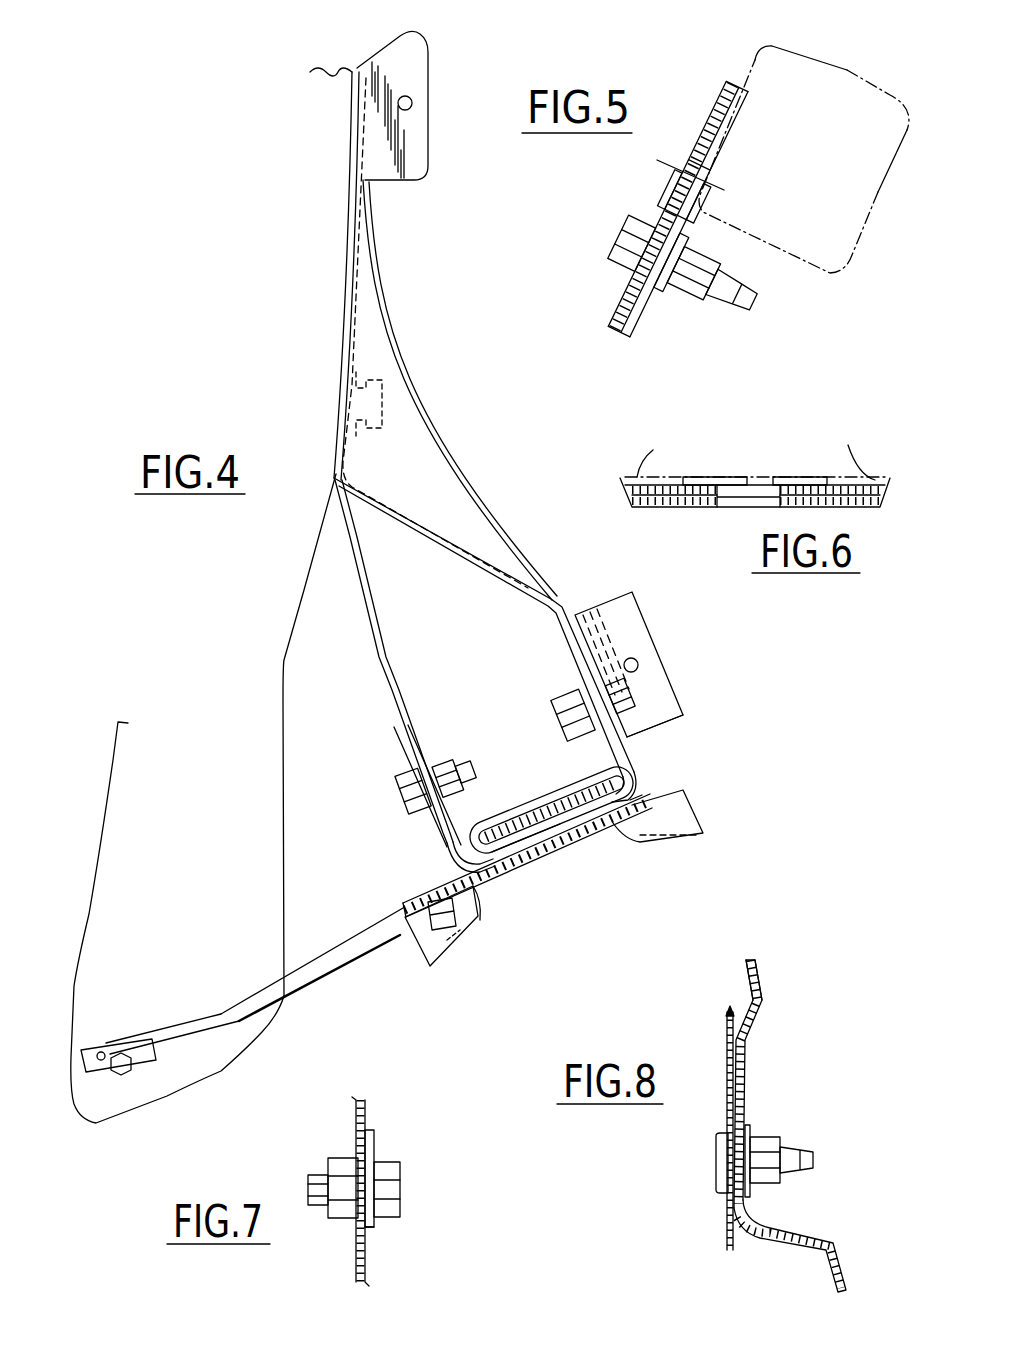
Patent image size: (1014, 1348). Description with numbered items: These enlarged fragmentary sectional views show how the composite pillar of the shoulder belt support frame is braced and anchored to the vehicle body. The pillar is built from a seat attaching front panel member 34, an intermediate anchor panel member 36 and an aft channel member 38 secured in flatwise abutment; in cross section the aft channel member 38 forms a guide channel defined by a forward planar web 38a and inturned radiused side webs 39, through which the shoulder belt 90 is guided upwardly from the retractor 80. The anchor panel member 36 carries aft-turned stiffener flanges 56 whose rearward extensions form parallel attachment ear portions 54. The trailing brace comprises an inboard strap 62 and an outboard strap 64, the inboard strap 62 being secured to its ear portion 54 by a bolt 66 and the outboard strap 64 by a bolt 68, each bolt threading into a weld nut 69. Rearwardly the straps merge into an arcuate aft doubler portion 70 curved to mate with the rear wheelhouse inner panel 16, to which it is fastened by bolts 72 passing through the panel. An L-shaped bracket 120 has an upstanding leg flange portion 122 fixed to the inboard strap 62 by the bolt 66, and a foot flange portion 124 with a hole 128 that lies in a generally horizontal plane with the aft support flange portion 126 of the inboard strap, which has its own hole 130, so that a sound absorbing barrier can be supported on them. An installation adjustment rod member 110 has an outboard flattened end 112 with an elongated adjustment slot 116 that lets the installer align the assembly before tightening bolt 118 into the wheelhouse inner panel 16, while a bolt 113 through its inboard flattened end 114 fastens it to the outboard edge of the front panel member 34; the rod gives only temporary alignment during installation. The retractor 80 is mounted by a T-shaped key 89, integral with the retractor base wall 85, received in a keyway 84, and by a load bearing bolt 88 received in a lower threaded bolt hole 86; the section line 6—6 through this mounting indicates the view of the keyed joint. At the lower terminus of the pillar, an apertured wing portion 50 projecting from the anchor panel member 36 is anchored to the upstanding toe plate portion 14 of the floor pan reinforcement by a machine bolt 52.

In FIG. 4, the aft support flange portion 126 is at (397, 52).
In FIG. 4, the hole 130 is at (412, 97).
In FIG. 4, the aft doubler portion 70 is at (350, 303).
In FIG. 8, the aft doubler portion 70 is at (748, 1073).
In FIG. 4, the bolt 72 is at (392, 373).
In FIG. 8, the bolt 72 is at (798, 1149).
In FIG. 4, the inboard strap 62 is at (551, 586).
In FIG. 8, the inboard strap 62 is at (764, 980).
In FIG. 4, the outboard strap 64 is at (385, 682).
In FIG. 8, the outboard strap 64 is at (758, 1227).
In FIG. 4, the rear wheelhouse inner panel 16 is at (118, 778).
In FIG. 8, the rear wheelhouse inner panel 16 is at (726, 1018).
In FIG. 4, the installation adjustment rod member 110 is at (233, 1003).
In FIG. 4, the outboard flattened end 112 is at (167, 1032).
In FIG. 4, the elongated adjustment slot 116 is at (153, 1064).
In FIG. 4, the bolt 118 is at (115, 1043).
In FIG. 4, the bolt 113 is at (481, 917).
In FIG. 4, the inboard flattened end 114 is at (433, 893).
In FIG. 4, the forward planar web 38a is at (600, 823).
In FIG. 4, the front panel member 34 is at (685, 790).
In FIG. 5, the front panel member 34 is at (619, 297).
In FIG. 6, the front panel member 34 is at (682, 510).
In FIG. 4, the intermediate anchor panel member 36 is at (646, 785).
In FIG. 5, the intermediate anchor panel member 36 is at (616, 333).
In FIG. 6, the intermediate anchor panel member 36 is at (868, 500).
In FIG. 7, the intermediate anchor panel member 36 is at (376, 1230).
In FIG. 4, the stiffener flange 56 is at (638, 783).
In FIG. 4, the attachment ear portion 54 is at (602, 765).
In FIG. 4, the aft channel member 38 is at (590, 786).
In FIG. 5, the aft channel member 38 is at (640, 327).
In FIG. 6, the aft channel member 38 is at (870, 483).
In FIG. 4, the inturned radiused side web 39 is at (492, 818).
In FIG. 4, the shoulder belt 90 is at (547, 833).
In FIG. 4, the bolt 68 is at (398, 793).
In FIG. 4, the bolt 66 is at (625, 698).
In FIG. 4, the weld nut 69 is at (560, 703).
In FIG. 4, the L-shaped bracket 120 is at (647, 606).
In FIG. 4, the upstanding leg flange portion 122 is at (597, 607).
In FIG. 4, the hole 128 is at (638, 664).
In FIG. 4, the foot flange portion 124 is at (681, 714).
In FIG. 5, the shoulder belt retractor 80 is at (835, 65).
In FIG. 6, the shoulder belt retractor 80 is at (642, 453).
In FIG. 5, the section line 6— 6 is at (668, 154).
In FIG. 5, the load bearing bolt 88 is at (628, 237).
In FIG. 5, the lower threaded bolt hole 86 is at (703, 260).
In FIG. 5, the retractor base wall 85 is at (700, 203).
In FIG. 6, the retractor base wall 85 is at (712, 478).
In FIG. 5, the keyway 84 is at (667, 187).
In FIG. 6, the keyway 84 is at (760, 492).
In FIG. 5, the T-shaped key 89 is at (677, 177).
In FIG. 6, the T-shaped key 89 is at (757, 500).
In FIG. 7, the toe plate portion 14 is at (356, 1262).
In FIG. 7, the apertured wing portion 50 is at (374, 1137).
In FIG. 7, the machine bolt 52 is at (401, 1187).